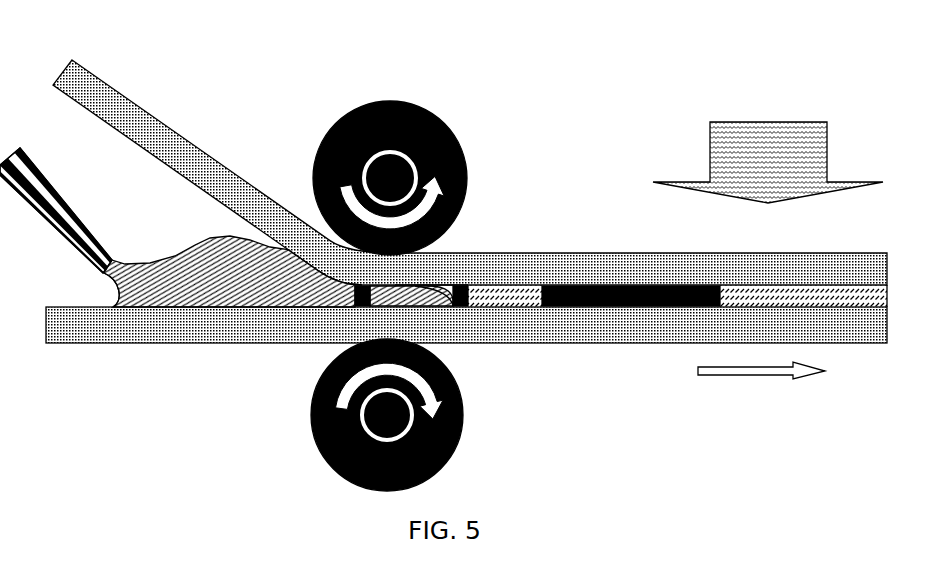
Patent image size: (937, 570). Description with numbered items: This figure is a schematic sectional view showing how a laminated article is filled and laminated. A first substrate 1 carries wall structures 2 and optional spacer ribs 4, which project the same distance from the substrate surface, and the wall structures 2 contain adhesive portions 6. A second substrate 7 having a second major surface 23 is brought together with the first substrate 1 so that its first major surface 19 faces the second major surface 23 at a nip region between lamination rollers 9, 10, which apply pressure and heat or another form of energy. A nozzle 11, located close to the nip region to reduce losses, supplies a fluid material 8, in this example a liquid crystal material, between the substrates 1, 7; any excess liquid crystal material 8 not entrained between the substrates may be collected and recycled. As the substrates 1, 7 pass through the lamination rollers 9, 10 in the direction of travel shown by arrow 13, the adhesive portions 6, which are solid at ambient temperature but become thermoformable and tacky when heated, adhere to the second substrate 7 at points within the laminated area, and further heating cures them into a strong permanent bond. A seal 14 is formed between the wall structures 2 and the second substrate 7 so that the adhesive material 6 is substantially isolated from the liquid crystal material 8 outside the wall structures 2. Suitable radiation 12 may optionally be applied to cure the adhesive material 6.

The first substrate 1 is at (148, 337).
The wall structures 2 is at (463, 300).
The spacer ribs 4 is at (633, 295).
The adhesive portions 6 is at (433, 300).
The second substrate 7 is at (162, 130).
The fluid material 8 is at (232, 283).
The lamination roller 9 is at (436, 104).
The lamination roller 10 is at (462, 455).
The nozzle 11 is at (66, 200).
The radiation 12 is at (763, 124).
The arrow 13 is at (742, 372).
The seal 14 is at (460, 283).
The first major surface 19 is at (55, 296).
The second major surface 23 is at (182, 190).